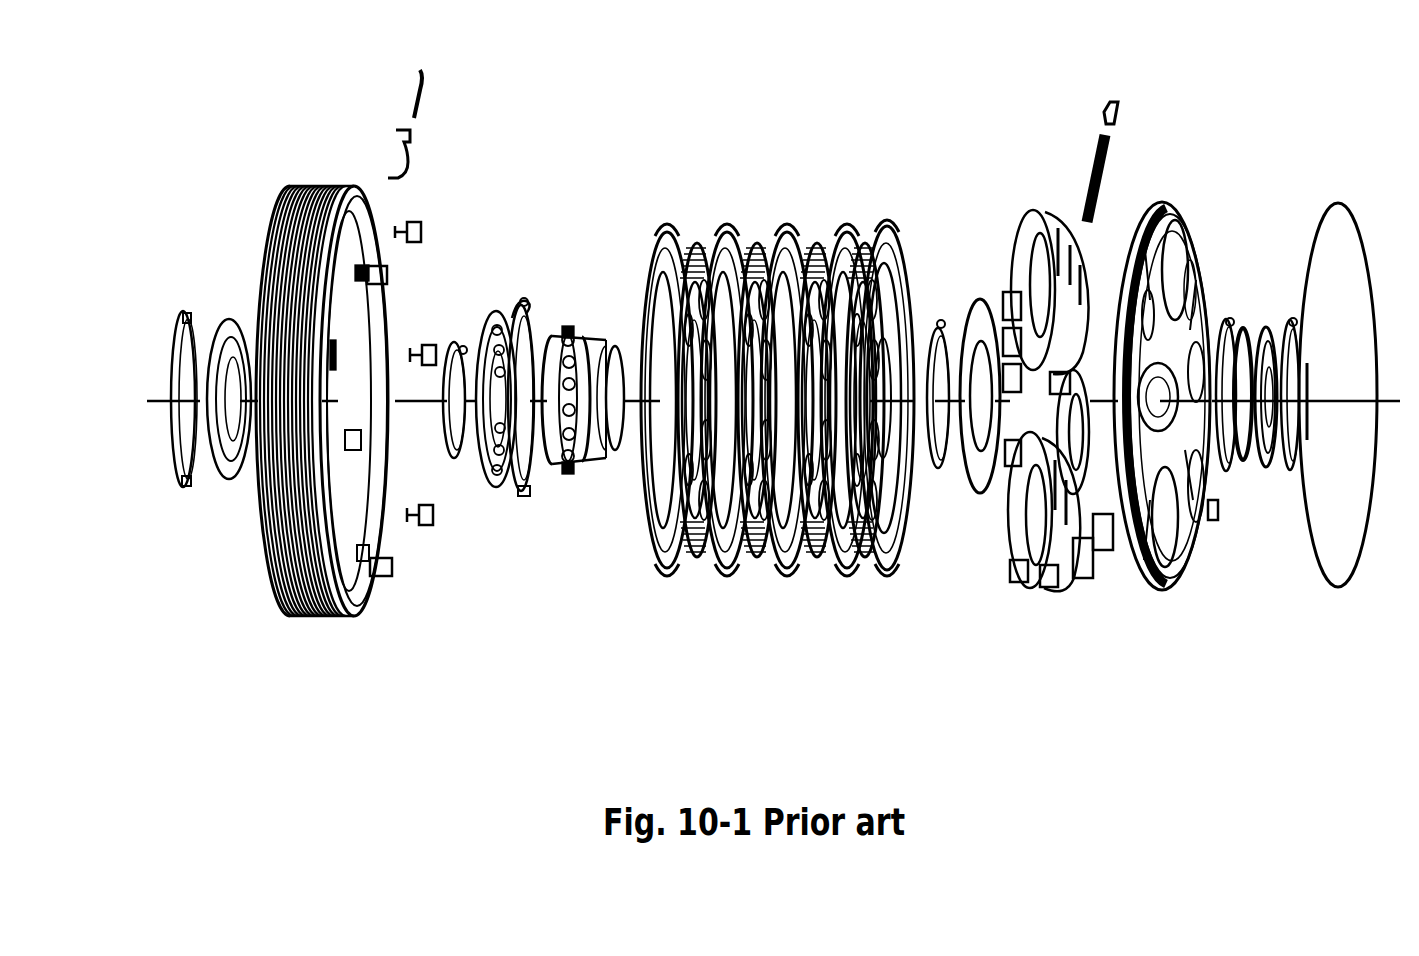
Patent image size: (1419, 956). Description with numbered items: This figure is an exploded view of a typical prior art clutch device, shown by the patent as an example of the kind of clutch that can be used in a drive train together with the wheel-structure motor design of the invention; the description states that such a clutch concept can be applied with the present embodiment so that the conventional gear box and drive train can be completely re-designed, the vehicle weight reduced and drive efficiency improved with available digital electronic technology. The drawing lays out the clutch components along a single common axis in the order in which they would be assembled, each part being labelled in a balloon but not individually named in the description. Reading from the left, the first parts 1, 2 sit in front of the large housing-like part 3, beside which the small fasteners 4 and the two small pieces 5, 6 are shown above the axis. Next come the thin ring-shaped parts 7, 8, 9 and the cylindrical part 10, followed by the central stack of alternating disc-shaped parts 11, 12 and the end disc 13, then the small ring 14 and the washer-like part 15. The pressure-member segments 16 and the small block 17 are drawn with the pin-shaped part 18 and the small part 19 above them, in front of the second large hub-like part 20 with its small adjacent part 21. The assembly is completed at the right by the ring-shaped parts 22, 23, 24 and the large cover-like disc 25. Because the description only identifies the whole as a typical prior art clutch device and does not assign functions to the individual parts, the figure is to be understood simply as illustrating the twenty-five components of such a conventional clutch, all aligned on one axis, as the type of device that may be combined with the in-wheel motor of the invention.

The snap ring 1 is at (182, 495).
The thrust washer 2 is at (232, 495).
The clutch housing 3 is at (317, 625).
The bolt 4 is at (388, 590).
The spring clip 5 is at (390, 150).
The pin 6 is at (425, 95).
The washer 7 is at (455, 468).
The bearing 8 is at (487, 500).
The retaining ring 9 is at (522, 510).
The bearing sleeve 10 is at (580, 480).
The steel plate 11 is at (655, 582).
The friction disc 12 is at (694, 572).
The pressure plate 13 is at (880, 585).
The snap ring 14 is at (935, 480).
The thrust washer 15 is at (982, 290).
The clutch hub segment 16 is at (1036, 600).
The key 17 is at (1083, 592).
The pin 18 is at (1088, 155).
The nut 19 is at (1117, 92).
The clutch hub 20 is at (1150, 600).
The retainer 21 is at (1210, 525).
The spring 22 is at (1247, 305).
The bushing 23 is at (1264, 478).
The snap ring 24 is at (1293, 310).
The cover plate 25 is at (1345, 598).